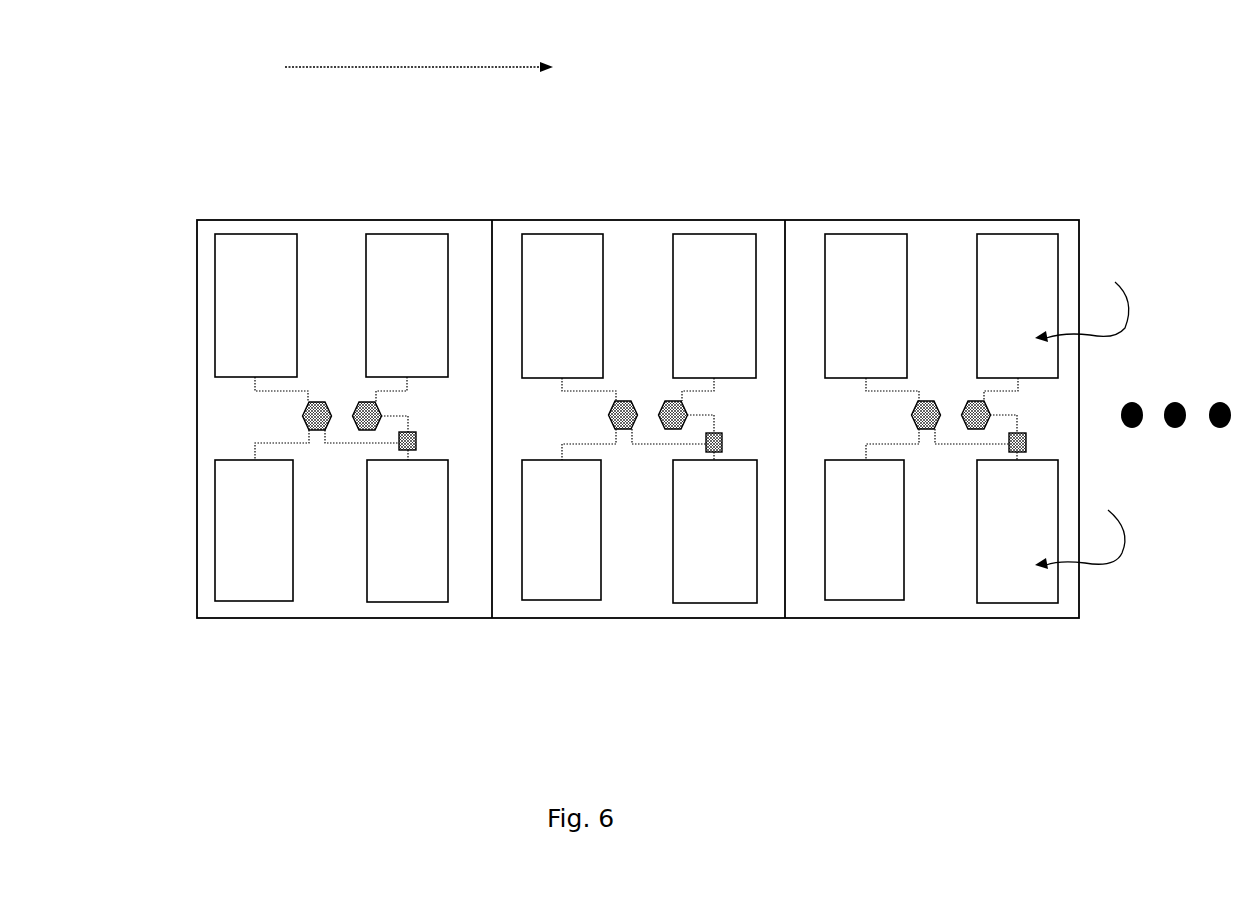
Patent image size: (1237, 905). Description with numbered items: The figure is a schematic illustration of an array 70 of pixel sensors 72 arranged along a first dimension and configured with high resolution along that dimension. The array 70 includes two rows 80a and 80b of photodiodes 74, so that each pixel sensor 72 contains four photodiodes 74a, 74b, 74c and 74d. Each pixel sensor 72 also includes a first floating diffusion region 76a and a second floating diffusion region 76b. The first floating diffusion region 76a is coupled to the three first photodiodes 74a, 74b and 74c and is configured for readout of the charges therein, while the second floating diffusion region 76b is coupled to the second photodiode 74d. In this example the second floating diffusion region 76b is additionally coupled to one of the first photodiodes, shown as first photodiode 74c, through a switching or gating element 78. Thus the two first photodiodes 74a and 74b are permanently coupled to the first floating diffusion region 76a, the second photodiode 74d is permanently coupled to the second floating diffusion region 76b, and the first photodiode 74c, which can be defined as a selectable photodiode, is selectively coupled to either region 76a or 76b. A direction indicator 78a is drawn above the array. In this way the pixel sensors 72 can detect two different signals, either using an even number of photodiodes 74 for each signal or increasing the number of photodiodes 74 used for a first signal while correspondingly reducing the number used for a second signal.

The array 70 is at (669, 198).
The pixel sensor 72 is at (330, 263).
The photodiode 74 is at (728, 263).
The first photodiode 74a is at (232, 307).
The first photodiode 74b is at (233, 560).
The first photodiode 74c is at (398, 553).
The second photodiode 74d is at (405, 283).
The first floating diffusion region 76a is at (302, 413).
The second floating diffusion region 76b is at (362, 412).
The switching or gating element 78 is at (402, 452).
The scan direction 78a is at (417, 54).
The row of photodiodes 80a is at (1091, 301).
The row of photodiodes 80b is at (1086, 528).